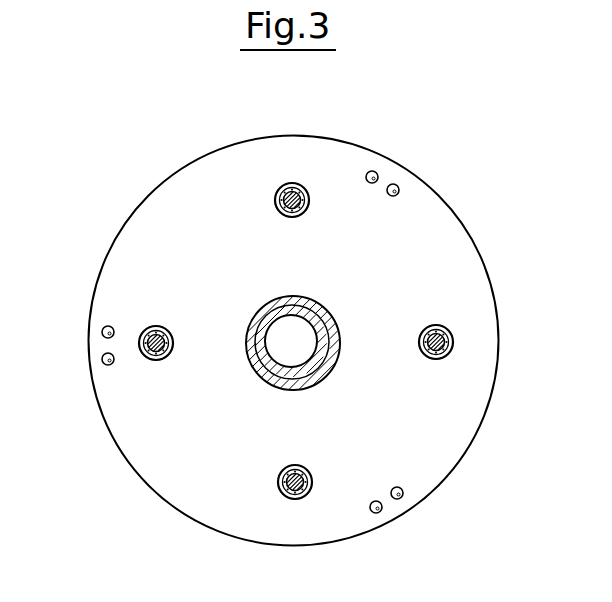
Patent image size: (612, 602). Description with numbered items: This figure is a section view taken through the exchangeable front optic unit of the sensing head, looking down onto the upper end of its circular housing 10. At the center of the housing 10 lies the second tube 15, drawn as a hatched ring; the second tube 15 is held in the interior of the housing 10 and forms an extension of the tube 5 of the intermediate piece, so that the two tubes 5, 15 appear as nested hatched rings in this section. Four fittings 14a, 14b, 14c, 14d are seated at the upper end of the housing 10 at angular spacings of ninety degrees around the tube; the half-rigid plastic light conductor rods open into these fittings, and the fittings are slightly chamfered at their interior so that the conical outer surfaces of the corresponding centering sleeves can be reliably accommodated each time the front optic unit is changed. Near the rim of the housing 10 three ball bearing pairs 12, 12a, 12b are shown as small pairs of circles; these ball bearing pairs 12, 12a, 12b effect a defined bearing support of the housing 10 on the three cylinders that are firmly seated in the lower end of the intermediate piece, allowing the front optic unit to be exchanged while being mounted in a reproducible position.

The housing 10 is at (484, 331).
The tube 5 is at (316, 305).
The second tube 15 is at (322, 335).
The fitting 14a is at (297, 499).
The fitting 14b is at (147, 358).
The fitting 14c is at (293, 184).
The fitting 14d is at (451, 341).
The ball bearing pair 12 is at (389, 172).
The ball bearing pair 12a is at (391, 505).
The ball bearing pair 12b is at (99, 344).